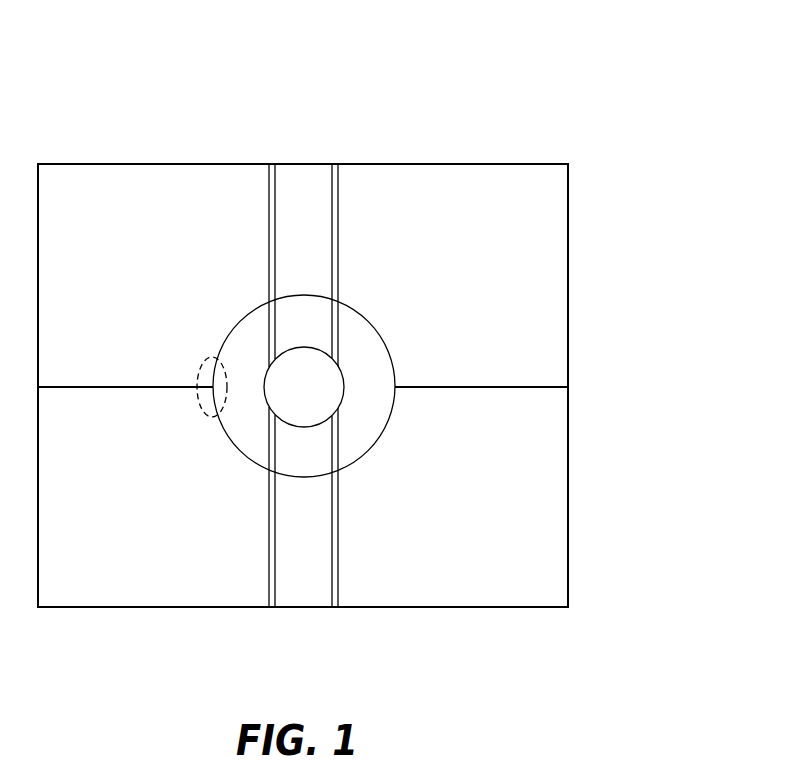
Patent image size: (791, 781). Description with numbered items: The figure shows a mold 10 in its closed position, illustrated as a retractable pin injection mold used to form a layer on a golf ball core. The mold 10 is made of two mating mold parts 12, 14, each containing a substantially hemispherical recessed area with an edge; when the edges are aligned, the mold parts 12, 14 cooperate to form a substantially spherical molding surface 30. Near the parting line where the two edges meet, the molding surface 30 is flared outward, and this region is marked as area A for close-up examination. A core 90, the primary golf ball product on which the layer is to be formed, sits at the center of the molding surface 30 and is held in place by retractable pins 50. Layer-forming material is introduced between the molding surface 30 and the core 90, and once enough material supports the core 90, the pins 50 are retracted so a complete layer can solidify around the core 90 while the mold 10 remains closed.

The mold 10 is at (427, 61).
The mold part 12 is at (546, 238).
The mold part 14 is at (569, 543).
The molding surface 30 is at (243, 451).
The retractable pins 50 is at (272, 164).
The core 90 is at (291, 399).
The area A is at (203, 408).